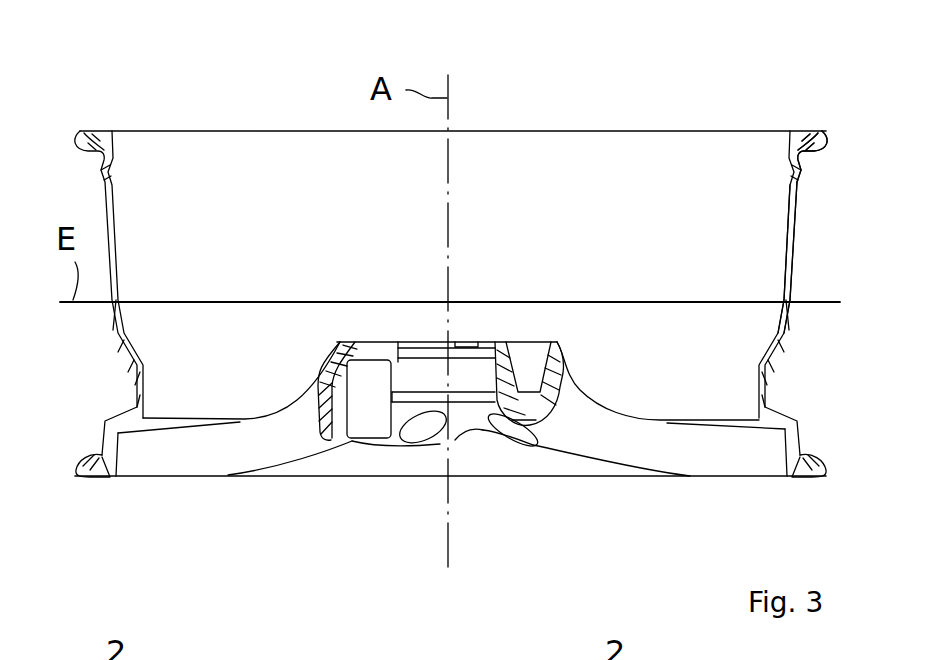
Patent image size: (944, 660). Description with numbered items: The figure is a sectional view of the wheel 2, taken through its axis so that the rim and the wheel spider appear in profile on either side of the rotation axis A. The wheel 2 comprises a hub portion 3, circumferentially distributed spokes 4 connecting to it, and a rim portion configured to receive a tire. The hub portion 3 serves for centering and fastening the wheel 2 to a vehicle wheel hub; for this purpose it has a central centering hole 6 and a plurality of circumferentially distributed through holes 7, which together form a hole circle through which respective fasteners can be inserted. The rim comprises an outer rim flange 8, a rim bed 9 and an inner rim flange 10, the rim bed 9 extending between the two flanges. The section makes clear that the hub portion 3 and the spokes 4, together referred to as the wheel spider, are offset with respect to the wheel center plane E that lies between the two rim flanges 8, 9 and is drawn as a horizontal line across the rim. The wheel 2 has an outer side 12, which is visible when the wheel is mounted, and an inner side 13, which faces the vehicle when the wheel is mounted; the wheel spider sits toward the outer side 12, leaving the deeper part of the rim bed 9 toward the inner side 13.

The wheel 2 is at (206, 101).
The hub portion 3 is at (531, 330).
The spokes 4 is at (630, 494).
The central centering hole 6 is at (484, 385).
The through holes 7 is at (346, 416).
The outer rim flange 8 is at (817, 477).
The rim bed 9 is at (791, 258).
The inner rim flange 10 is at (818, 131).
The outer side 12 is at (552, 530).
The inner side 13 is at (578, 92).